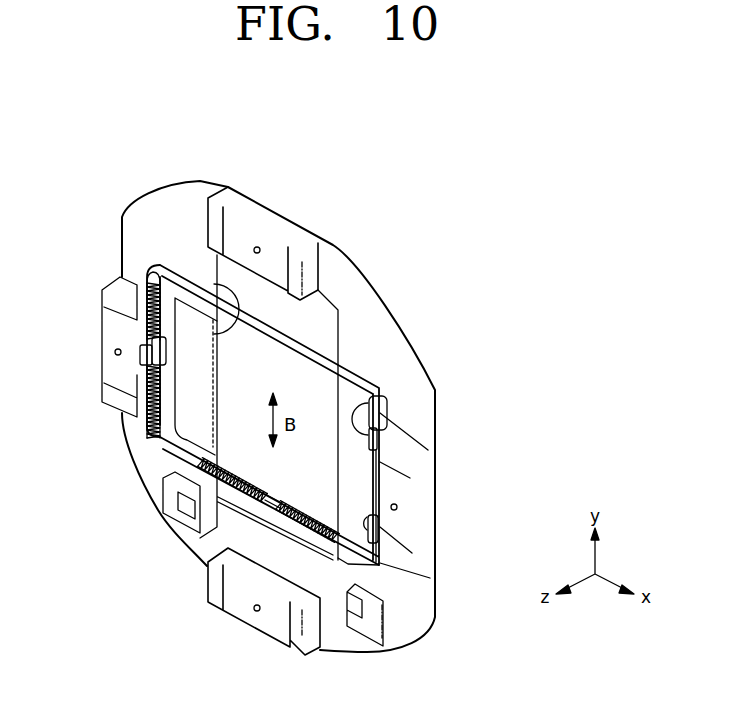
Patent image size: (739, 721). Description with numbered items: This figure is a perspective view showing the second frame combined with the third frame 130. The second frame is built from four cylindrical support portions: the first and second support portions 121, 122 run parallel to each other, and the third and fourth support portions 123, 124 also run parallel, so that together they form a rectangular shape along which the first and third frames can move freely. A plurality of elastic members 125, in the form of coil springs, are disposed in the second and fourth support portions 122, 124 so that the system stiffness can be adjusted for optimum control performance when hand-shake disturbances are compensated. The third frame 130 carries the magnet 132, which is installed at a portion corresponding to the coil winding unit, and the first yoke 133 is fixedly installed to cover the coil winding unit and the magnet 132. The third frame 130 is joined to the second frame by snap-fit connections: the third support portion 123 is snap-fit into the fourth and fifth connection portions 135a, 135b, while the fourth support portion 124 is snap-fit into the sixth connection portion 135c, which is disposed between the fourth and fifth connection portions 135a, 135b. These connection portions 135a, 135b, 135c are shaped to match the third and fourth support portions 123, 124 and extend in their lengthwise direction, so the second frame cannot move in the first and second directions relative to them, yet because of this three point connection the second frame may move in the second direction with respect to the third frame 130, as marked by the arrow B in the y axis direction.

The first support portion 121 is at (367, 367).
The second support portion 122 is at (360, 565).
The third support portion 123 is at (386, 420).
The fourth support portion 124 is at (150, 348).
The elastic member 125 is at (150, 272).
The third frame 130 is at (370, 313).
The magnet 132 is at (190, 425).
The first yoke 133 is at (212, 283).
The fourth connection portion 135a is at (386, 398).
The fifth connection portion 135b is at (373, 517).
The sixth connection portion 135c is at (143, 367).